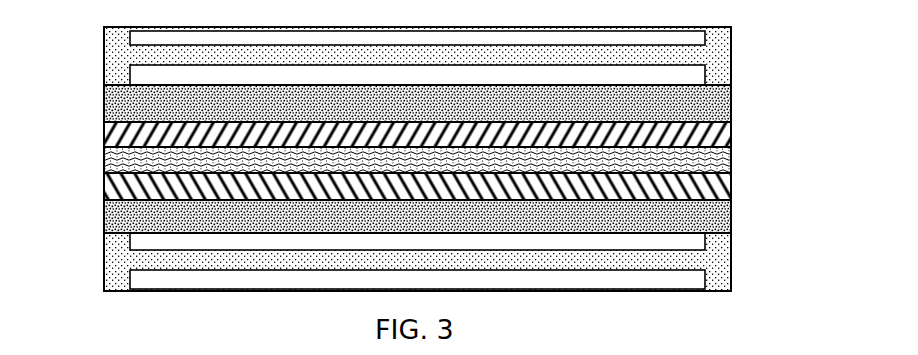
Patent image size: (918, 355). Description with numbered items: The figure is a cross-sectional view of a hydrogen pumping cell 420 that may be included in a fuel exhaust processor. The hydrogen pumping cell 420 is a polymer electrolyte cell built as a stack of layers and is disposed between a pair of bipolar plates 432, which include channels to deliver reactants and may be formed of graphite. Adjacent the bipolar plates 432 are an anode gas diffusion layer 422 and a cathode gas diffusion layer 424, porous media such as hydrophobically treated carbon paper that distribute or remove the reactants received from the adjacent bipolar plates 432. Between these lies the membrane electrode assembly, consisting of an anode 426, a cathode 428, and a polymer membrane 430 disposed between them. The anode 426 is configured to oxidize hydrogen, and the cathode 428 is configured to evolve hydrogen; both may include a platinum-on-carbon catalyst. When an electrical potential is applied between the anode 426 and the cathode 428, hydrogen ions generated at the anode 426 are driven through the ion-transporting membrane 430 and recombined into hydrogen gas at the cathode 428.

The hydrogen pumping cell 420 is at (416, 153).
The anode gas diffusion layer 422 is at (732, 217).
The cathode gas diffusion layer 424 is at (732, 99).
The anode 426 is at (732, 190).
The cathode 428 is at (733, 128).
The polymer membrane 430 is at (732, 160).
The bipolar plate 432 is at (732, 47).